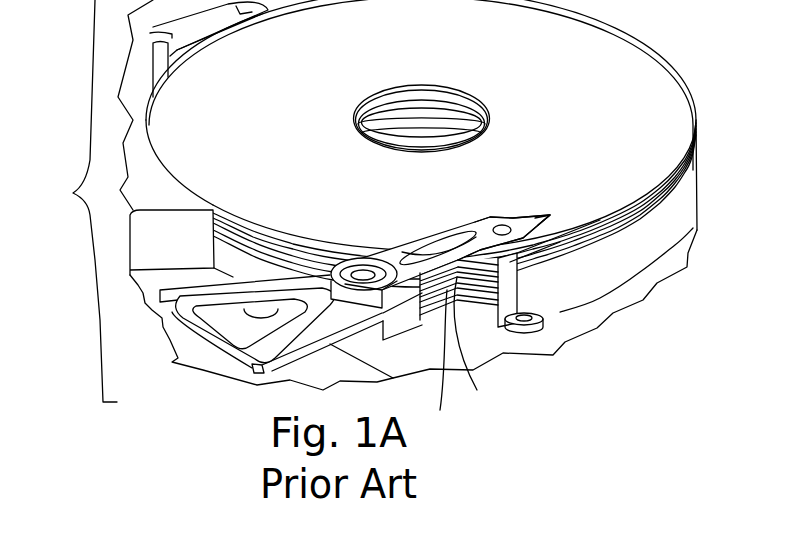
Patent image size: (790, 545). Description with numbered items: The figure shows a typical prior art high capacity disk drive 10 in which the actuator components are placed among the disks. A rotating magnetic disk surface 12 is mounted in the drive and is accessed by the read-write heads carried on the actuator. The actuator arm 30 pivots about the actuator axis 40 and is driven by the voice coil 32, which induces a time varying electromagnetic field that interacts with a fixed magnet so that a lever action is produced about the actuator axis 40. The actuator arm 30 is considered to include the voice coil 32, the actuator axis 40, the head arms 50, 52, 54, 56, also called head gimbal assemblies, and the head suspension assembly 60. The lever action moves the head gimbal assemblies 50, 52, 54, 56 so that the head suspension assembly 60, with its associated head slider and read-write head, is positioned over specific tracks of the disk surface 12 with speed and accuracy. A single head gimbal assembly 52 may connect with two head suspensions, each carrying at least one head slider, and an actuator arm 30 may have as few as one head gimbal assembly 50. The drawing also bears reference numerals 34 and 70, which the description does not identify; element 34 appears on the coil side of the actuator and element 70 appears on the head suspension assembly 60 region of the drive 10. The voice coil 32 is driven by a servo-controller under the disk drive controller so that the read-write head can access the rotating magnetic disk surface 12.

The high capacity disk drive 10 is at (77, 201).
The rotating magnetic disk surface 12 is at (615, 52).
The actuator arm 30 is at (400, 323).
The voice coil 32 is at (230, 355).
The coil support arm 34 is at (320, 338).
The actuator axis 40 is at (362, 266).
The head arm 50 is at (472, 228).
The head gimbal assembly 52 is at (457, 302).
The head gimbal assembly 54 is at (484, 340).
The head gimbal assembly 56 is at (427, 356).
The head suspension assembly 60 is at (533, 214).
The suspension hole 70 is at (498, 220).